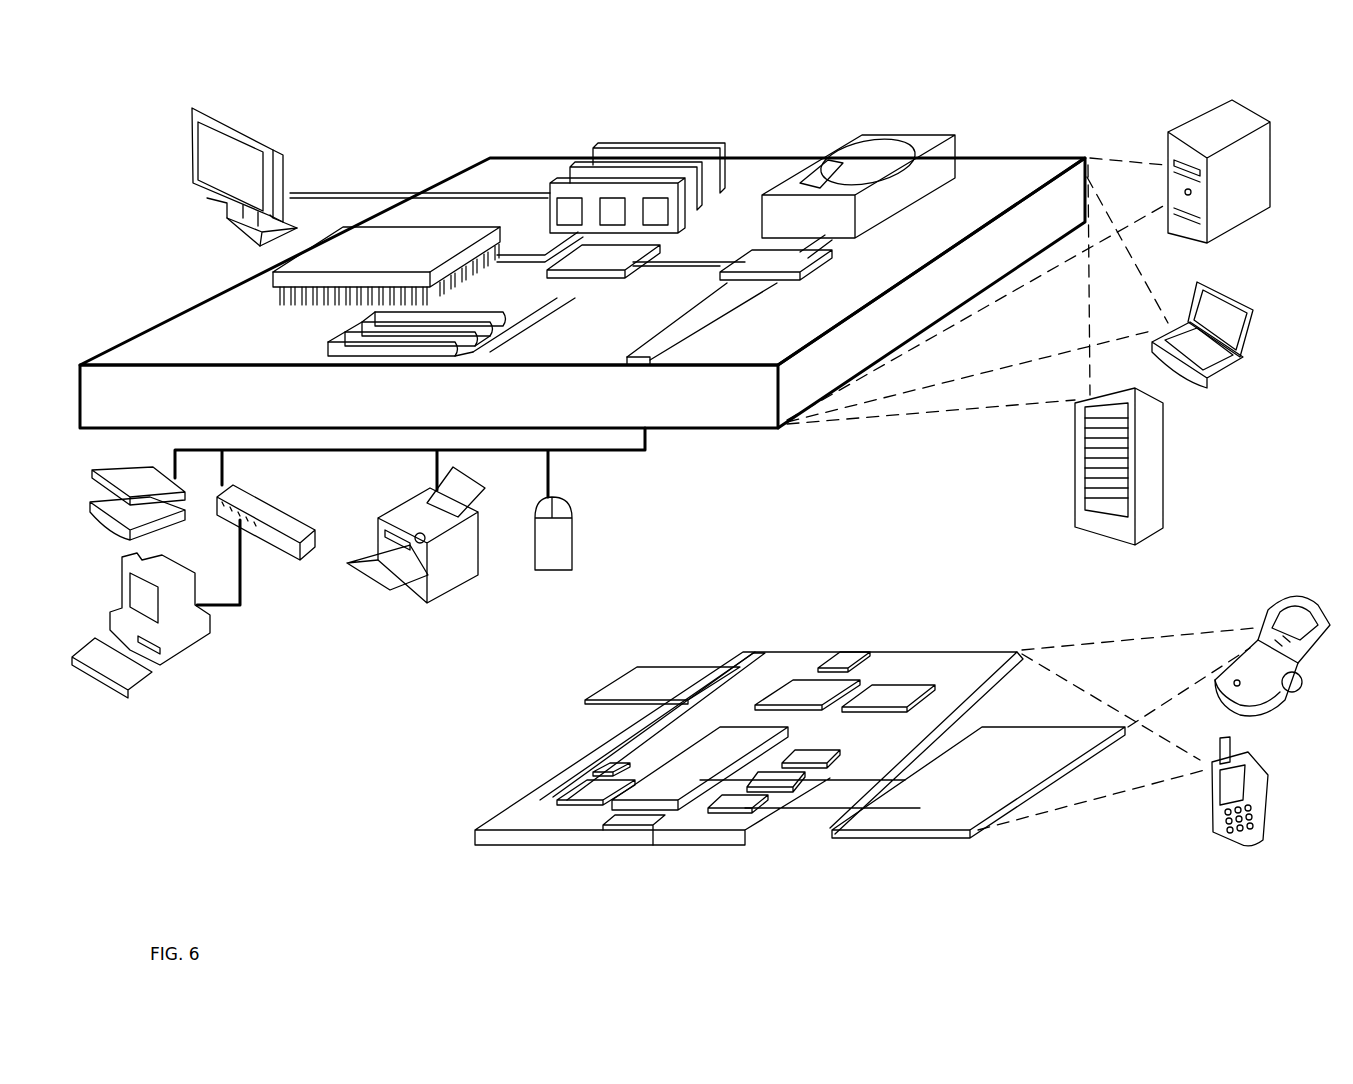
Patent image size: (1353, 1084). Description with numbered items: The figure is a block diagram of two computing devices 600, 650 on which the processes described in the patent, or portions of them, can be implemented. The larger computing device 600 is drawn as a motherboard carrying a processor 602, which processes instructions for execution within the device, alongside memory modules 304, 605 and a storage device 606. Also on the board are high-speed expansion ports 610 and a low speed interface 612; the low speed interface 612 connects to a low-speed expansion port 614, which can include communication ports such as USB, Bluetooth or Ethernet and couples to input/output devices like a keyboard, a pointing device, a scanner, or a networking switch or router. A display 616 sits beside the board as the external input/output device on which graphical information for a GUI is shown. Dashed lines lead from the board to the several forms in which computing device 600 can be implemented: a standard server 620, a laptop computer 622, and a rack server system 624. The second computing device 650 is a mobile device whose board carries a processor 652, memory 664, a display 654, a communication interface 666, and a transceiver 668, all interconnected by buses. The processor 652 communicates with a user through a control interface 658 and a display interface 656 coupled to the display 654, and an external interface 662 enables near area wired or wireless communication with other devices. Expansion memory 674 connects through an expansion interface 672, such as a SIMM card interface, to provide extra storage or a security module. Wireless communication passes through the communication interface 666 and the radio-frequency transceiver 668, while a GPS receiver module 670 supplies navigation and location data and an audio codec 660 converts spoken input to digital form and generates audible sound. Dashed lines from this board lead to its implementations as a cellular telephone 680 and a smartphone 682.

The computing device 600 is at (1267, 85).
The processor 602 is at (272, 288).
The memory module 304 is at (625, 147).
The memory modules 605 is at (590, 150).
The hard disk drive 606 is at (860, 135).
The high-speed expansion ports 610 is at (350, 327).
The low speed interface 612 is at (763, 270).
The low-speed expansion port 614 is at (645, 366).
The display 616 is at (208, 105).
The standard server 620 is at (1183, 127).
The laptop computer 622 is at (1213, 377).
The rack server system 624 is at (1077, 503).
The computing device 650 is at (460, 740).
The processor 652 is at (677, 790).
The display 654 is at (947, 807).
The display interface 656 is at (733, 803).
The control interface 658 is at (785, 778).
The audio codec 660 is at (827, 755).
The external interface 662 is at (627, 833).
The memory 664 is at (578, 780).
The communication interface 666 is at (797, 690).
The transceiver 668 is at (895, 690).
The GPS receiver module 670 is at (863, 660).
The expansion interface 672 is at (727, 660).
The expansion memory 674 is at (627, 675).
The cellular telephone 680 is at (1277, 605).
The smartphone 682 is at (1210, 797).